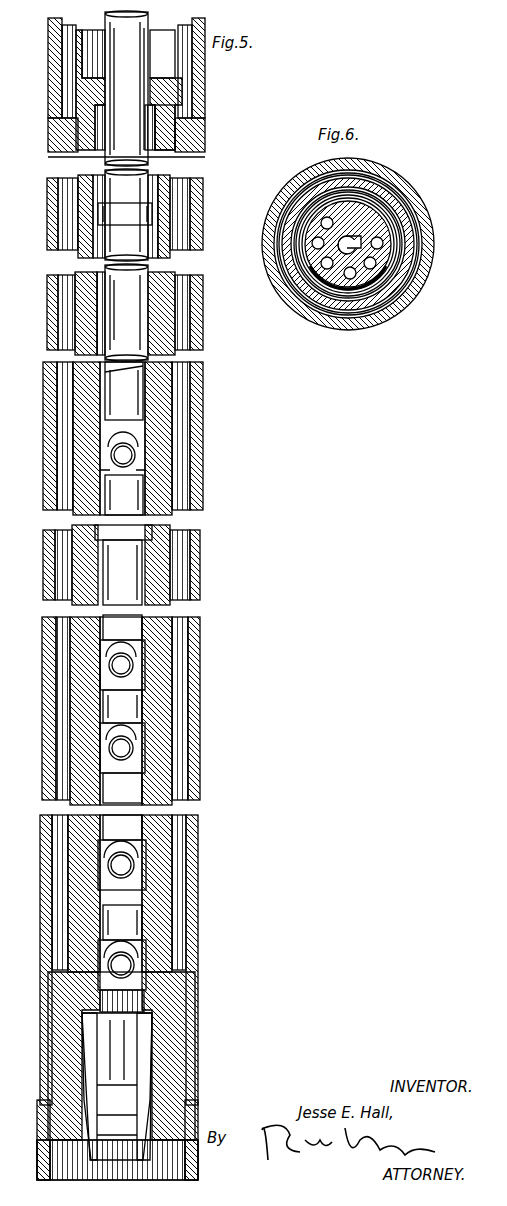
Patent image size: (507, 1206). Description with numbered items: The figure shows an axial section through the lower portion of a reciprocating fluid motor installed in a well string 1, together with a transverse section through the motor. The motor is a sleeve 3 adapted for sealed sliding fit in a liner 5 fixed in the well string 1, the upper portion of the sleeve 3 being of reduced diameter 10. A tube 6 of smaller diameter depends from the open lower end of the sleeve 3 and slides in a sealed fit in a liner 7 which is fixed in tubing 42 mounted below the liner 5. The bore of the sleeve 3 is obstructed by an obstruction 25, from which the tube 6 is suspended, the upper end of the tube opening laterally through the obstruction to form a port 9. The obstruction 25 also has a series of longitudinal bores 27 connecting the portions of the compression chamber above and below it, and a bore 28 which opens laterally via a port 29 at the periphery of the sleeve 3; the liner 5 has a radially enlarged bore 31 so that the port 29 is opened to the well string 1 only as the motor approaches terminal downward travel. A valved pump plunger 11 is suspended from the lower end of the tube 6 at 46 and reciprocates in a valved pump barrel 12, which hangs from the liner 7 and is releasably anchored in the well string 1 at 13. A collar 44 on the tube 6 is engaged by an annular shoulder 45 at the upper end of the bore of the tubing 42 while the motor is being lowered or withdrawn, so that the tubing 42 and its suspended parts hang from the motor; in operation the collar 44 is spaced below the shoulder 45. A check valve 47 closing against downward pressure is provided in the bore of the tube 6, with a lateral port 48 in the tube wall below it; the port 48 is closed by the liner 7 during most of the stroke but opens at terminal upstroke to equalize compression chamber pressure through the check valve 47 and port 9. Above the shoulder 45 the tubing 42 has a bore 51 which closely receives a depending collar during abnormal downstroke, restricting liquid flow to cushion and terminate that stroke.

In FIG. 5, the well string 1 is at (197, 697).
In FIG. 6, the well string 1 is at (384, 318).
In FIG. 6, the sleeve 3 is at (414, 262).
In FIG. 6, the liner 5 is at (283, 262).
In FIG. 5, the tube 6 is at (128, 300).
In FIG. 5, the liner 7 is at (85, 455).
In FIG. 6, the port 9 is at (385, 178).
In FIG. 6, the reduced diameter portion 10 is at (410, 268).
In FIG. 5, the pump plunger 11 is at (95, 630).
In FIG. 5, the pump barrel 12 is at (80, 830).
In FIG. 5, the anchor 13 is at (75, 1000).
In FIG. 6, the obstruction 25 is at (318, 222).
In FIG. 6, the longitudinal bores 27 is at (318, 282).
In FIG. 6, the bore 28 is at (400, 298).
In FIG. 6, the port 29 is at (412, 232).
In FIG. 6, the enlarged bore 31 is at (328, 300).
In FIG. 5, the tubing 42 is at (168, 143).
In FIG. 5, the collar 44 is at (140, 215).
In FIG. 5, the annular shoulder 45 is at (160, 80).
In FIG. 5, the suspension point 46 is at (150, 545).
In FIG. 5, the check valve 47 is at (125, 440).
In FIG. 5, the lateral port 48 is at (145, 495).
In FIG. 5, the bore 51 is at (78, 40).